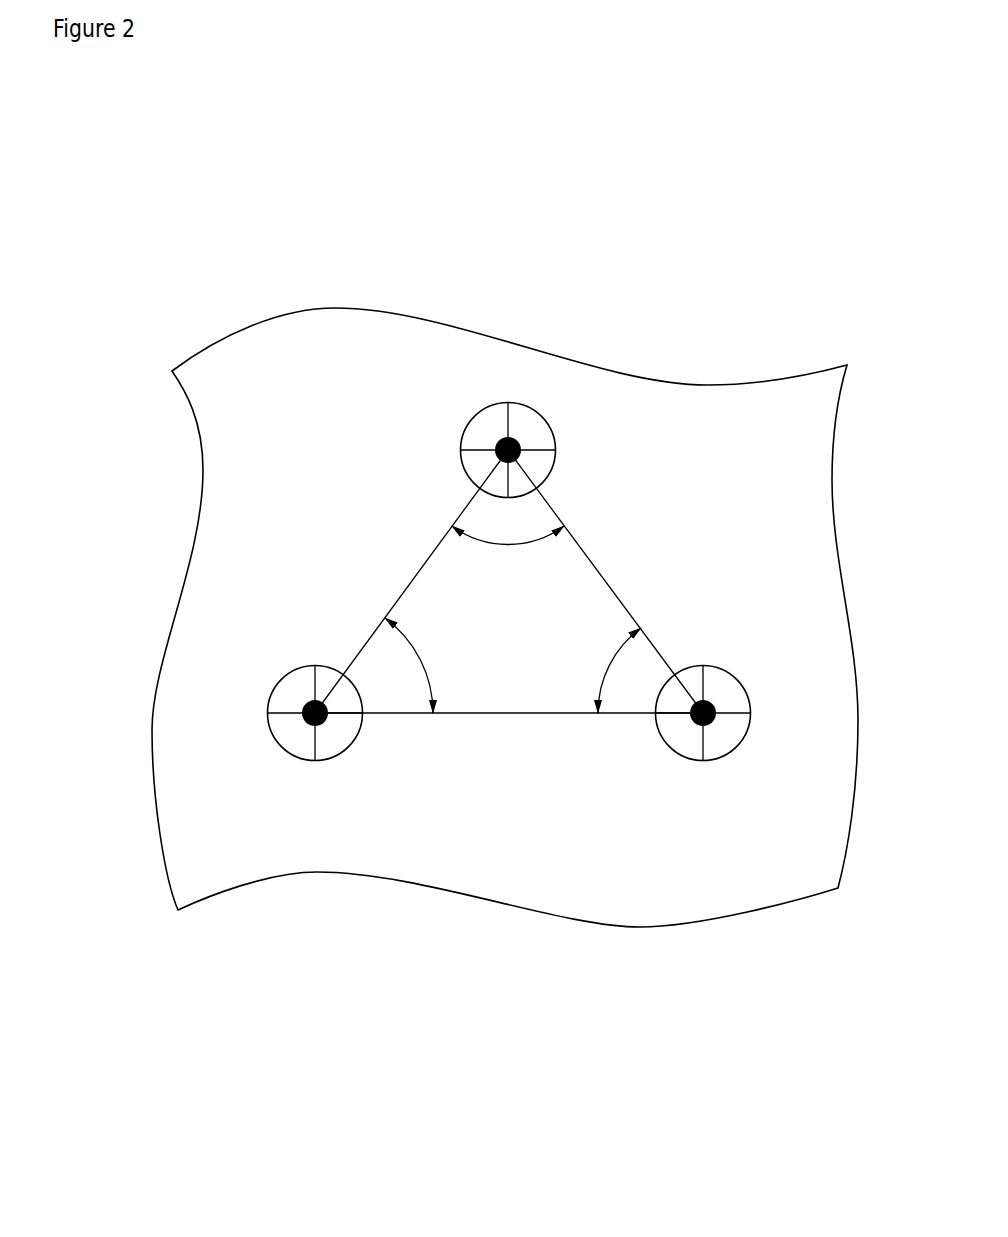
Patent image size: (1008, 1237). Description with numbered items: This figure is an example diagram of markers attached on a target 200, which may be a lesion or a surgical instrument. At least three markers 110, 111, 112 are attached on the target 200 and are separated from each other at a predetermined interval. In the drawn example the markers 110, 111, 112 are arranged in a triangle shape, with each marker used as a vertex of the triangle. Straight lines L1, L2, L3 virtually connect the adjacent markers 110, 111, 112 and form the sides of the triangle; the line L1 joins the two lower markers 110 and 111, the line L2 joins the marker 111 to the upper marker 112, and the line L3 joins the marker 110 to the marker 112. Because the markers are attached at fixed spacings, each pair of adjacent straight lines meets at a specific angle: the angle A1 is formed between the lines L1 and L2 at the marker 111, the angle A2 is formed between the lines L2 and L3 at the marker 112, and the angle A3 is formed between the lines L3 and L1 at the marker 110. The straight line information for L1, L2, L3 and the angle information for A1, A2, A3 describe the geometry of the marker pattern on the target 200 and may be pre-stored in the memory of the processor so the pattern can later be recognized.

The target 200 is at (207, 654).
The marker 110 is at (290, 752).
The marker 111 is at (724, 760).
The marker 112 is at (525, 405).
The straight line L1 is at (508, 714).
The straight line L2 is at (604, 580).
The straight line L3 is at (410, 583).
The angle A1 is at (607, 670).
The angle A2 is at (508, 551).
The angle A3 is at (420, 665).